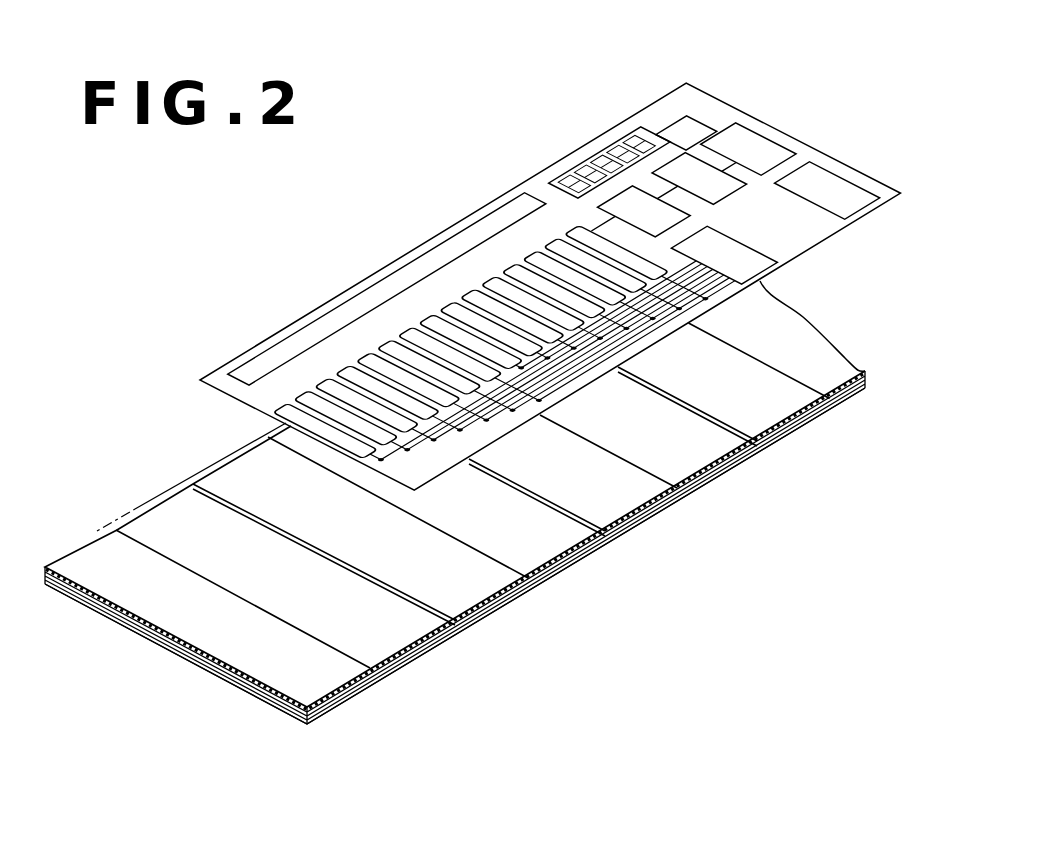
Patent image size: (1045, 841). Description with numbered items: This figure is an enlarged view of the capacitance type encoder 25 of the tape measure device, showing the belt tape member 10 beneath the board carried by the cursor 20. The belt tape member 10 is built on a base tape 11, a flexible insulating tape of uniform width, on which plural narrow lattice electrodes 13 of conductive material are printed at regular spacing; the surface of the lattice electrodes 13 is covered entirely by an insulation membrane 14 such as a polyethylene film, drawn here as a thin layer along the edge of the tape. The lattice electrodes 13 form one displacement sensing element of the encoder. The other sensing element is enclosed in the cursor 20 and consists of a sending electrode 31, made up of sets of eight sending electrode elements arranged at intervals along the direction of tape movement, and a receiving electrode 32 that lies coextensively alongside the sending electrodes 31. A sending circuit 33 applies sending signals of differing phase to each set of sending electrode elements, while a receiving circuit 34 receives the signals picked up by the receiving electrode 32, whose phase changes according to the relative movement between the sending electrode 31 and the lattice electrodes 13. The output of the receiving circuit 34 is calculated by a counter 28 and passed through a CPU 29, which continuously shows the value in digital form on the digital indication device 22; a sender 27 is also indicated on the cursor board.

The belt tape member 10 is at (437, 650).
The base tape 11 is at (107, 618).
The lattice electrodes 13 is at (98, 546).
The insulation membrane 14 is at (183, 650).
The cursor 20 is at (667, 101).
The digital indication device 22 is at (590, 156).
The capacitance type encoder 25 is at (430, 203).
The sender 27 is at (870, 180).
The counter 28 is at (686, 150).
The CPU 29 is at (773, 137).
The sending electrode 31 is at (378, 344).
The receiving electrode 32 is at (400, 273).
The sending circuit 33 is at (770, 252).
The receiving circuit 34 is at (690, 215).